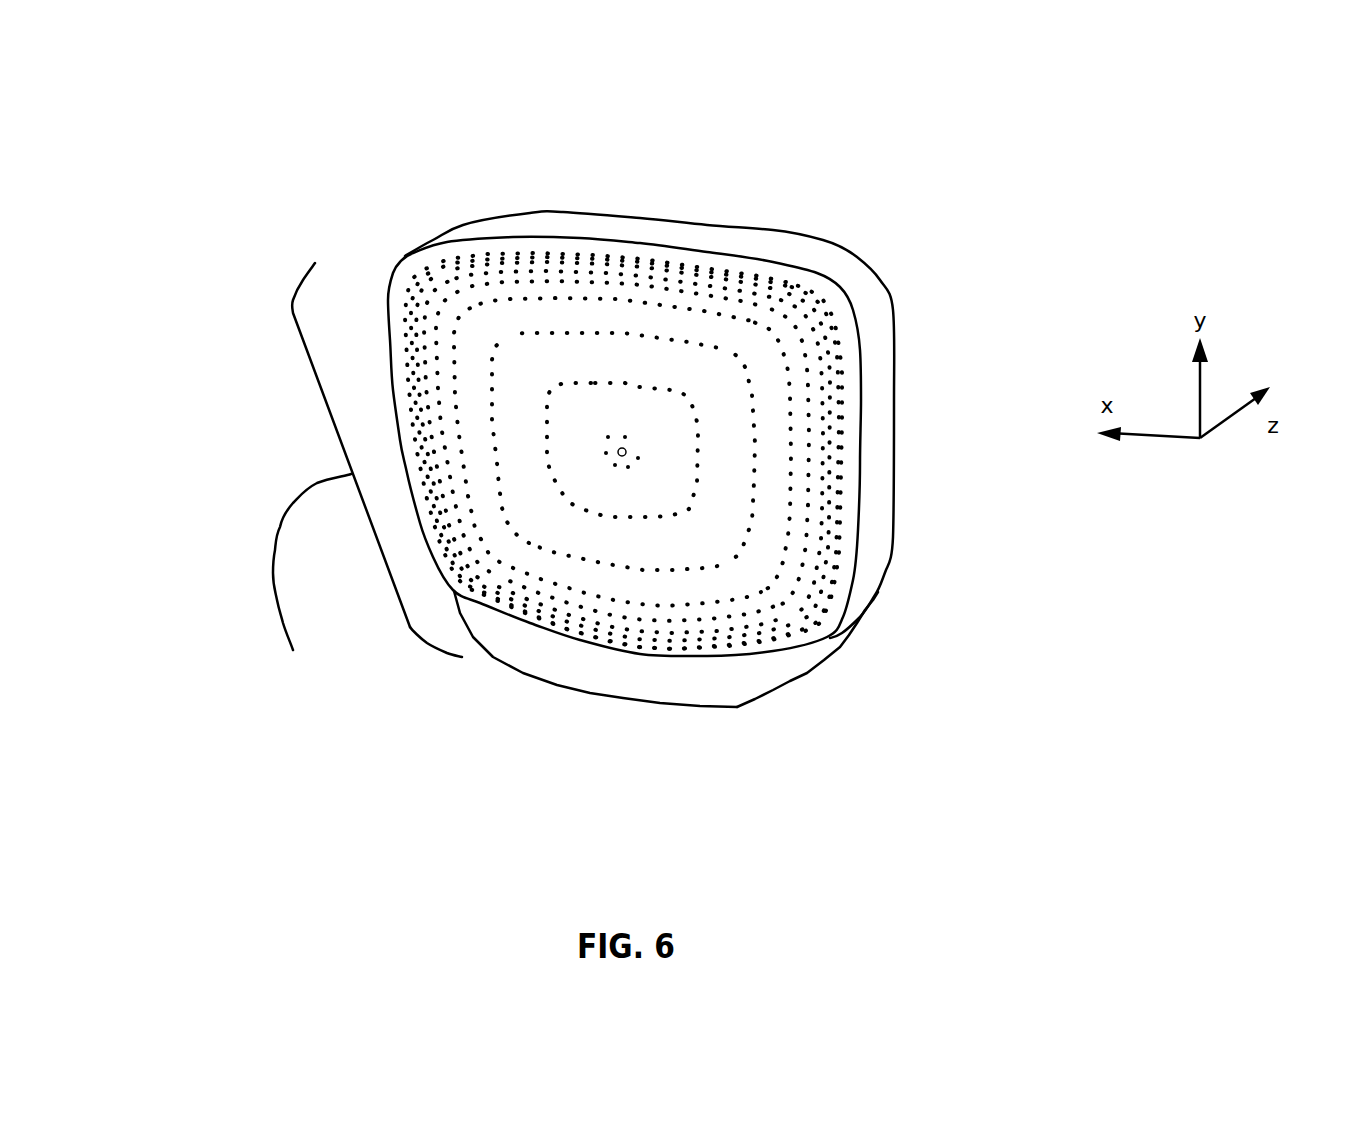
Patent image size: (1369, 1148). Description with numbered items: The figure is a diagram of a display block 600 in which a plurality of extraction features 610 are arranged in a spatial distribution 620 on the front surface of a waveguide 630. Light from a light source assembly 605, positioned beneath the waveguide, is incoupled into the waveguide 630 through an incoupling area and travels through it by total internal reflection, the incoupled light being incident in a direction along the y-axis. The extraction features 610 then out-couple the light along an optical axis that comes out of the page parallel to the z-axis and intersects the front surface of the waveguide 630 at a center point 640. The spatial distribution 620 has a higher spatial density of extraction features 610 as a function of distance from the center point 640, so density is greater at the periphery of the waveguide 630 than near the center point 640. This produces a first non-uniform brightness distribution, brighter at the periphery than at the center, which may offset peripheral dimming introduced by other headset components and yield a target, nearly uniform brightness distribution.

The display block 600 is at (163, 74).
The light source assembly 605 is at (770, 670).
The extraction features 610 is at (522, 263).
The spatial distribution 620 is at (322, 504).
The waveguide 630 is at (662, 553).
The center point 640 is at (637, 437).